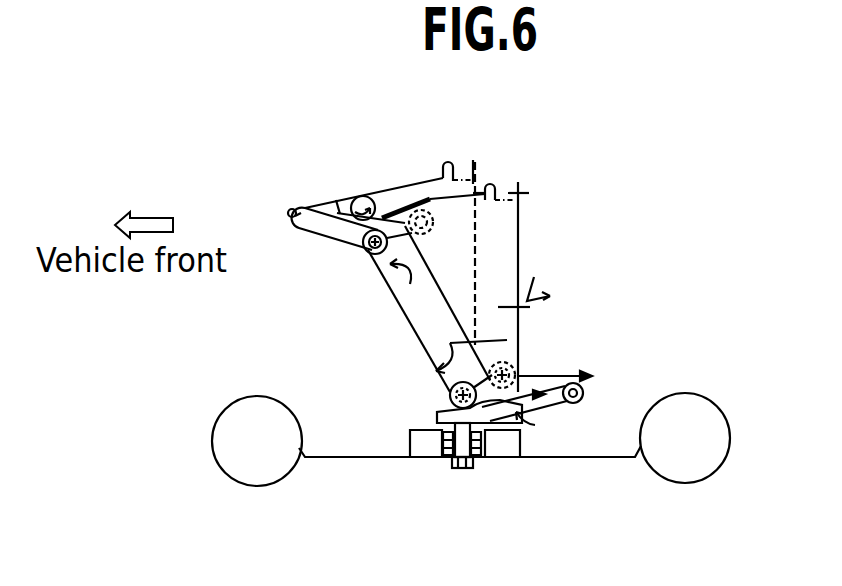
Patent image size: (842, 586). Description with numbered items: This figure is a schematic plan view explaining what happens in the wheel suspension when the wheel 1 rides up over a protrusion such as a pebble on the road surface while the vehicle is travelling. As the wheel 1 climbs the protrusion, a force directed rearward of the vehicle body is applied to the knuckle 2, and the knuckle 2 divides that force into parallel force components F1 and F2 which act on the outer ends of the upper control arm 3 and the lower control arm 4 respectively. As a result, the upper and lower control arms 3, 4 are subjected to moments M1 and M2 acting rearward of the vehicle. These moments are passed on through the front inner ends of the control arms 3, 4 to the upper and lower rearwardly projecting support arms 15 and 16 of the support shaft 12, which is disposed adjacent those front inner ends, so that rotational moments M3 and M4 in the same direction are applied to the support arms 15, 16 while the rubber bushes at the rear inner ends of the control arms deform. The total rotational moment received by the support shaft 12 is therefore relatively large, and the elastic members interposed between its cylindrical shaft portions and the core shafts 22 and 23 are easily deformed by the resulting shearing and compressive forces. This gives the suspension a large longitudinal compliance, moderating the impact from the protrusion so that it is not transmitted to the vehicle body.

The wheel 1 is at (258, 477).
The knuckle 2 is at (500, 423).
The upper control arm 3 is at (508, 232).
The lower control arm 4 is at (421, 332).
The support shaft 12 is at (315, 236).
The upper support arm 15 is at (396, 207).
The lower support arm 16 is at (342, 203).
The core shaft 22 is at (376, 255).
The core shaft 23 is at (289, 221).
The moment M1 is at (549, 270).
The moment M2 is at (435, 371).
The rotational moment M3 is at (414, 286).
The rotational moment M4 is at (365, 183).
The force component F1 is at (547, 375).
The force component F2 is at (541, 427).